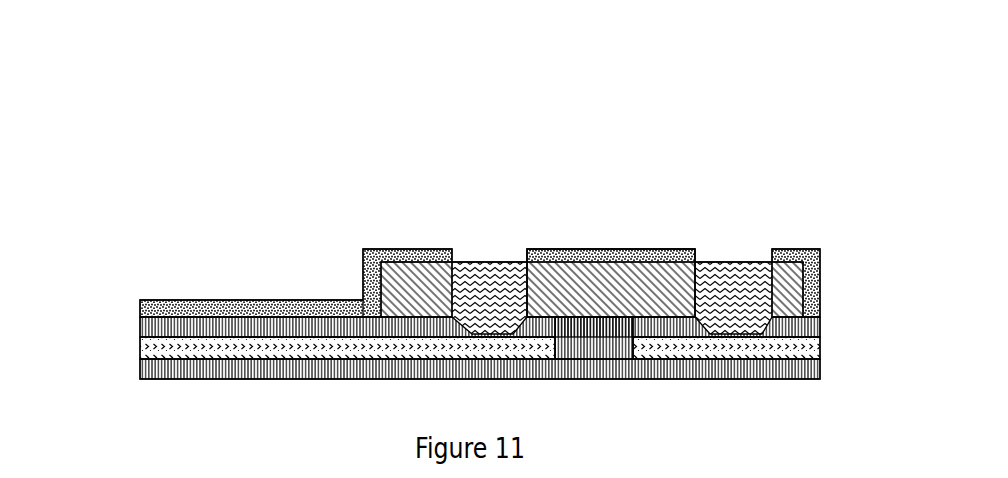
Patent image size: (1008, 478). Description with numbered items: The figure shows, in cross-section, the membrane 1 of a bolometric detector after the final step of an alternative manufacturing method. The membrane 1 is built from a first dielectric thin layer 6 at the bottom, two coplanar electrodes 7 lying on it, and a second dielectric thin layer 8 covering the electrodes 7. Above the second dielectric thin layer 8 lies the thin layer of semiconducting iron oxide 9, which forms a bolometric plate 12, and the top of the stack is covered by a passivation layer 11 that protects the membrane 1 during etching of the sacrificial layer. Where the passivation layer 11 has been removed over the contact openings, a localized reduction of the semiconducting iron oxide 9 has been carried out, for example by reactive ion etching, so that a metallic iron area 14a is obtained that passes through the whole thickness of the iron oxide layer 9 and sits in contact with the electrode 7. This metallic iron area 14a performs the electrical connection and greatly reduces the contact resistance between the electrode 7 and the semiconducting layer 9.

The membrane 1 is at (447, 127).
The first dielectric thin layer 6 is at (155, 370).
The coplanar electrodes 7 is at (153, 350).
The second dielectric thin layer 8 is at (155, 327).
The thin layer of semiconducting iron oxide 9 is at (597, 285).
The passivation layer 11 is at (183, 308).
The bolometric plate 12 is at (583, 190).
The metallic iron area 14a is at (767, 272).